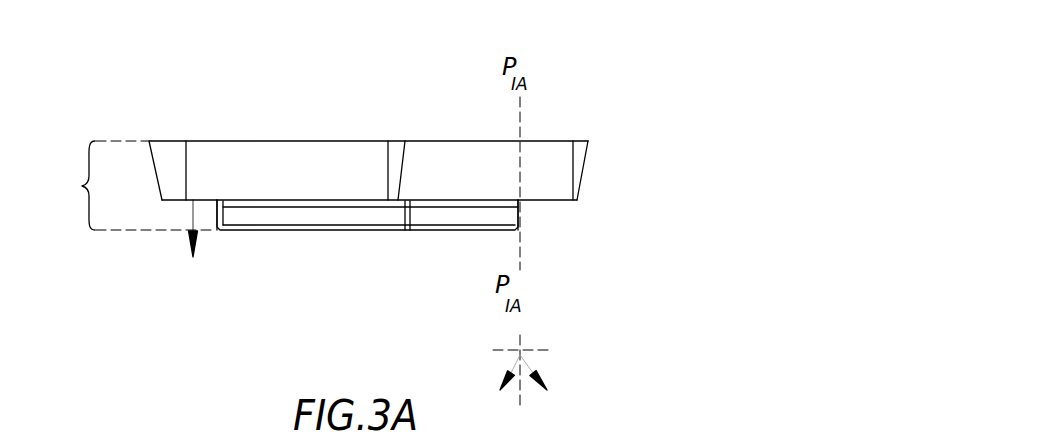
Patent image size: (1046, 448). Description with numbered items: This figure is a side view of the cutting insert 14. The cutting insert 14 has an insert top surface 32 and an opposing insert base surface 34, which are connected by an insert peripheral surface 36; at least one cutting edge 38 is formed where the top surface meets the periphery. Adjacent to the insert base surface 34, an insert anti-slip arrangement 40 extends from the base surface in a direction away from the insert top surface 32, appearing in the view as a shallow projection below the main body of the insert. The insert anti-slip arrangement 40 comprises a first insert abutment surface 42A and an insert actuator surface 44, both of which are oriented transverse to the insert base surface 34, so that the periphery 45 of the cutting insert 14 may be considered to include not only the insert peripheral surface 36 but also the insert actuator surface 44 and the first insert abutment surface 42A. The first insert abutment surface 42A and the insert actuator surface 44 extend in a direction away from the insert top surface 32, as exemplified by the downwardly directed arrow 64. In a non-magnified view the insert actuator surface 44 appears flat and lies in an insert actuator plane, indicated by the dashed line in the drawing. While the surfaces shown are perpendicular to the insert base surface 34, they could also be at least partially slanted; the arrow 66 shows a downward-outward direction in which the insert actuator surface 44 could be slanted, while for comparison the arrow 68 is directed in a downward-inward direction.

The cutting insert 14 is at (662, 56).
The insert top surface 32 is at (566, 129).
The insert base surface 34 is at (560, 212).
The insert peripheral surface 36 is at (594, 164).
The cutting edge 38 is at (603, 131).
The insert anti-slip arrangement 40 is at (527, 228).
The insert actuator surface 44 is at (464, 215).
The first insert abutment surface 42A is at (258, 213).
The periphery 45 is at (74, 185).
The downwardly directed arrow 64 is at (188, 215).
The downward-outward direction arrow 66 is at (532, 365).
The downward-inward direction arrow 68 is at (512, 365).